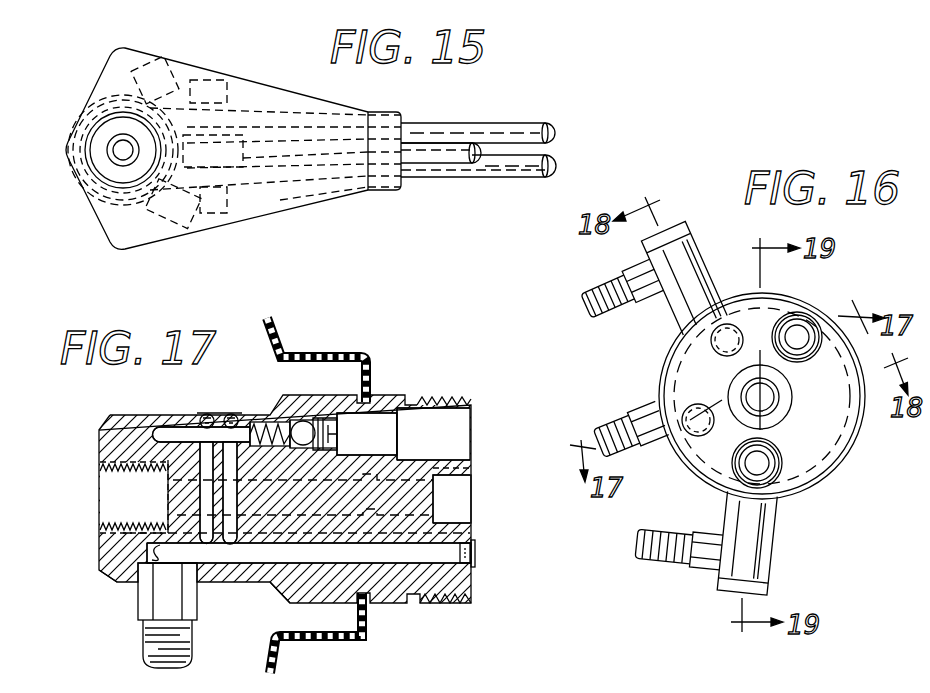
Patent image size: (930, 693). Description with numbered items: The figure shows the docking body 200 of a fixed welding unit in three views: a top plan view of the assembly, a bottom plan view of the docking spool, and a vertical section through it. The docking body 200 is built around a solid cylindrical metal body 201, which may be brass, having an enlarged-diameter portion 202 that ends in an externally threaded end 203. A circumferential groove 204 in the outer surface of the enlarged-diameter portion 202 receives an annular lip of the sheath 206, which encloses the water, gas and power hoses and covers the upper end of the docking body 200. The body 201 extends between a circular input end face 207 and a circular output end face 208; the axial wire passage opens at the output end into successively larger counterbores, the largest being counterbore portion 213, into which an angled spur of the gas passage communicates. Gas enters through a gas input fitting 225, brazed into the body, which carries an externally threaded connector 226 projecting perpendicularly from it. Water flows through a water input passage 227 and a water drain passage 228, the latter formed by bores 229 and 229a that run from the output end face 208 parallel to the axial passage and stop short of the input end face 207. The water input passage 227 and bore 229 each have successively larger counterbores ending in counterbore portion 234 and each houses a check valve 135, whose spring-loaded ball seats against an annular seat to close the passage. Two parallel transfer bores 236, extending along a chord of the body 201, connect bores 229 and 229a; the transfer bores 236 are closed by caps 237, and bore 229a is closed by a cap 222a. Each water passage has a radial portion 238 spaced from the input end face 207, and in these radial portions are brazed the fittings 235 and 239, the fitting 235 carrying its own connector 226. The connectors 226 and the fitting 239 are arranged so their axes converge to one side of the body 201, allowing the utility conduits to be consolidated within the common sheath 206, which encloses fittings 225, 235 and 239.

In FIG. 17, the check valve 135 is at (301, 428).
In FIG. 17, the docking body 200 is at (358, 349).
In FIG. 16, the solid cylindrical metal body 201 is at (838, 468).
In FIG. 17, the solid cylindrical metal body 201 is at (137, 413).
In FIG. 17, the enlarged-diameter portion 202 is at (297, 603).
In FIG. 17, the externally threaded end 203 is at (452, 398).
In FIG. 17, the circumferential groove 204 is at (372, 397).
In FIG. 15, the sheath 206 is at (296, 86).
In FIG. 17, the sheath 206 is at (295, 642).
In FIG. 17, the circular input end face 207 is at (99, 452).
In FIG. 16, the circular output end face 208 is at (845, 434).
In FIG. 17, the circular output end face 208 is at (473, 578).
In FIG. 16, the counterbore portion 213 is at (787, 393).
In FIG. 17, the cap 222a is at (478, 552).
In FIG. 16, the gas input fitting 225 is at (702, 280).
In FIG. 16, the externally threaded connector 226 is at (592, 290).
In FIG. 16, the water input passage 227 is at (766, 463).
In FIG. 16, the water drain passage 228 is at (797, 340).
In FIG. 17, the water drain passage 228 is at (460, 427).
In FIG. 17, the bore 229 is at (173, 432).
In FIG. 17, the bore 229a is at (380, 555).
In FIG. 17, the counterbore portion 234 is at (457, 457).
In FIG. 16, the fitting 235 is at (778, 572).
In FIG. 17, the transfer bores 236 is at (200, 497).
In FIG. 17, the caps 237 is at (232, 412).
In FIG. 17, the radial portion 238 is at (117, 568).
In FIG. 16, the fitting 239 is at (656, 404).
In FIG. 17, the fitting 239 is at (138, 607).